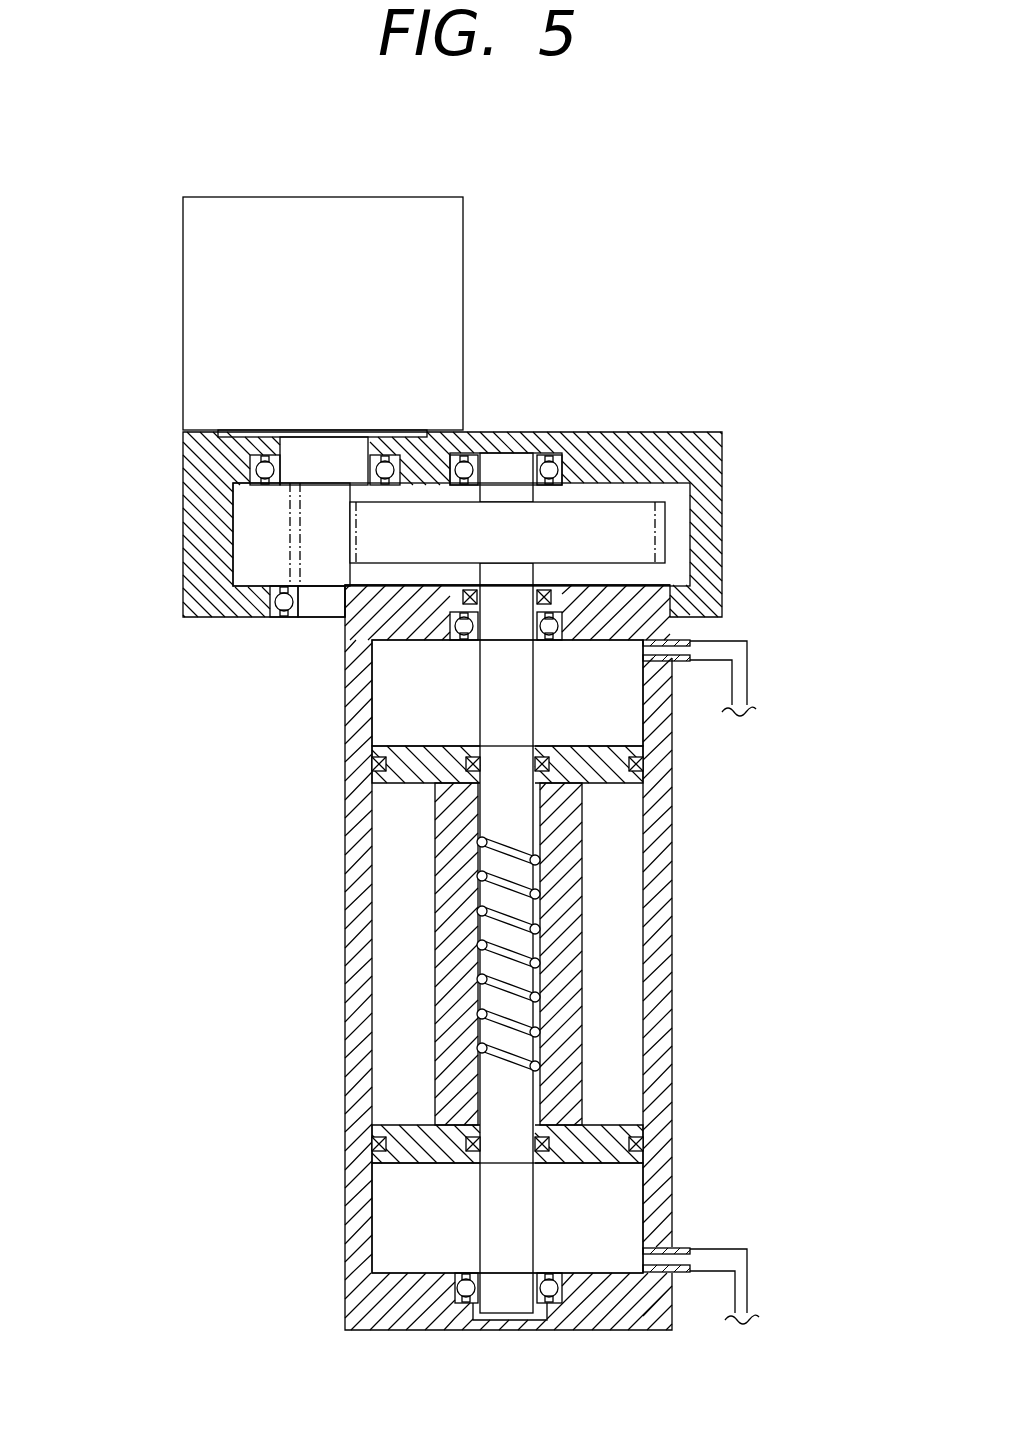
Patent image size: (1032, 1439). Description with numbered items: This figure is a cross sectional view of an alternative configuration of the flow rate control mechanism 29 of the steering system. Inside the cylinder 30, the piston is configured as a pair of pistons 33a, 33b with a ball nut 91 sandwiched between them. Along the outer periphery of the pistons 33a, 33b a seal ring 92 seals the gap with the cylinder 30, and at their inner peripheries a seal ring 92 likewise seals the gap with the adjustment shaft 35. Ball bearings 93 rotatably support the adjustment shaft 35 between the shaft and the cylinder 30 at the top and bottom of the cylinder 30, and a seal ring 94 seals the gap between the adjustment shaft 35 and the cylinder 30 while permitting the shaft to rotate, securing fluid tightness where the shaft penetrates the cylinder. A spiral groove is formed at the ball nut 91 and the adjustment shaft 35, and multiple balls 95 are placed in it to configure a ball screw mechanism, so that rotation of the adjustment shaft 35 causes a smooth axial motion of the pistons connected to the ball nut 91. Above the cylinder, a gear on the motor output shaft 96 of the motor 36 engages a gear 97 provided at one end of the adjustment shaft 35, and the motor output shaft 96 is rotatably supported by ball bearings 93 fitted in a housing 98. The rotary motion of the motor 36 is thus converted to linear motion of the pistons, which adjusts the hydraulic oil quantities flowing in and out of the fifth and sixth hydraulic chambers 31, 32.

The flow rate control mechanism 29 is at (714, 348).
The cylinder 30 is at (665, 978).
The fifth hydraulic chamber 31 is at (600, 722).
The sixth hydraulic chamber 32 is at (620, 1203).
The piston 33a is at (640, 783).
The piston 33b is at (410, 1128).
The adjustment shaft 35 is at (495, 690).
The motor 36 is at (212, 273).
The ball nut 91 is at (452, 960).
The seal ring 92 is at (645, 1137).
The ball bearings 93 is at (455, 1278).
The seal ring 94 is at (455, 598).
The balls 95 is at (545, 925).
The motor output shaft 96 is at (305, 437).
The gear 97 is at (628, 535).
The housing 98 is at (616, 432).